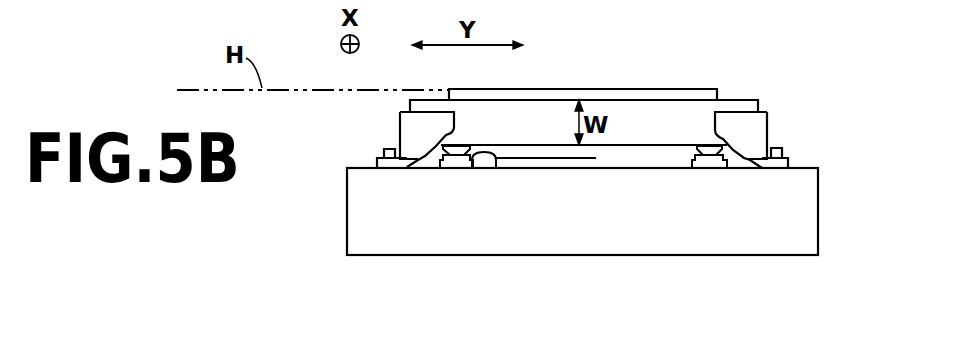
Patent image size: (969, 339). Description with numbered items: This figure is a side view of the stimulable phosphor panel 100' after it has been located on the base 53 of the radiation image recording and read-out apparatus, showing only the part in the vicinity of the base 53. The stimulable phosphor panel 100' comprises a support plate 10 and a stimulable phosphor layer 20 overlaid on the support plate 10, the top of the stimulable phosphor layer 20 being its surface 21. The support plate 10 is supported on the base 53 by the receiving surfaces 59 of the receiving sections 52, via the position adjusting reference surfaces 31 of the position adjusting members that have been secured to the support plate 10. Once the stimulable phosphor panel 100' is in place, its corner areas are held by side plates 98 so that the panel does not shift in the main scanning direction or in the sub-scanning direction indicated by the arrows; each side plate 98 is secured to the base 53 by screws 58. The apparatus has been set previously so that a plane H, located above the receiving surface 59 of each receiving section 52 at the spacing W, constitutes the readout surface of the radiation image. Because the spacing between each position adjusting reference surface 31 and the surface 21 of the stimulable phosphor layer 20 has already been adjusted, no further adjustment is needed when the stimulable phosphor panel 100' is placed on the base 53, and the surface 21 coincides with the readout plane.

The stimulable phosphor panel 100' is at (612, 136).
The support plate 10 is at (692, 112).
The stimulable phosphor layer 20 is at (642, 99).
The surface of the stimulable phosphor layer 21 is at (588, 89).
The side plate 98 is at (752, 128).
The screw 58 is at (787, 152).
The base 53 is at (818, 226).
The position adjusting reference surface 31 is at (458, 170).
The receiving section 52 is at (465, 170).
The receiving surface 59 is at (483, 163).